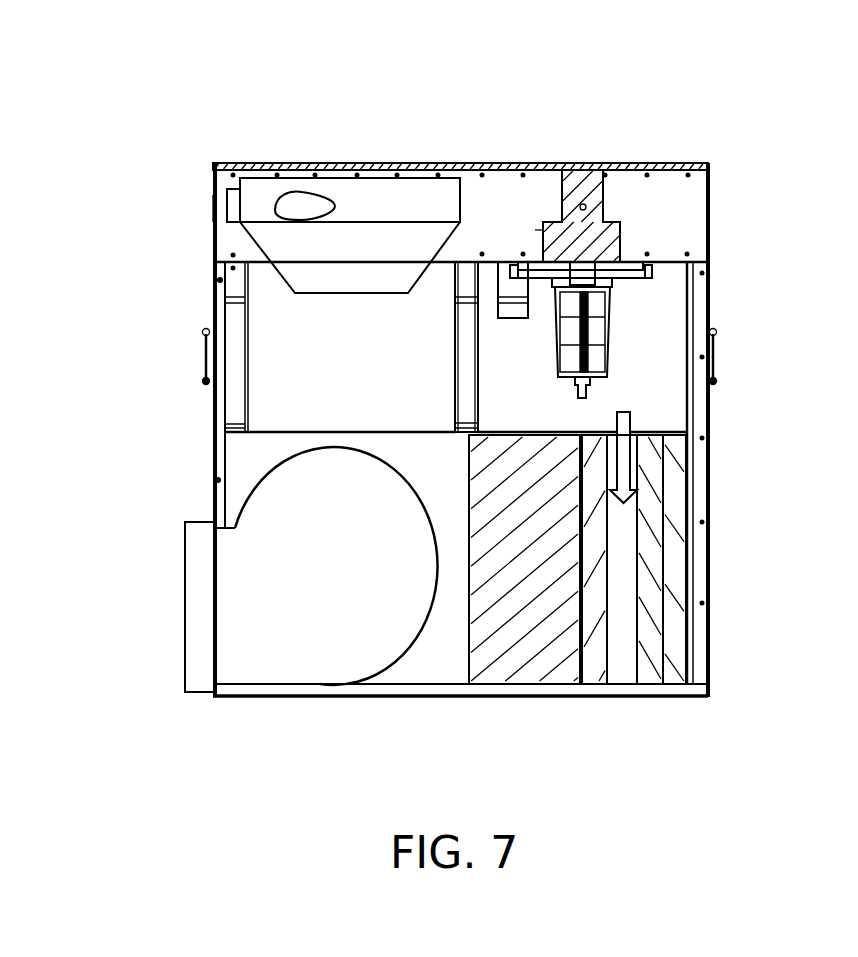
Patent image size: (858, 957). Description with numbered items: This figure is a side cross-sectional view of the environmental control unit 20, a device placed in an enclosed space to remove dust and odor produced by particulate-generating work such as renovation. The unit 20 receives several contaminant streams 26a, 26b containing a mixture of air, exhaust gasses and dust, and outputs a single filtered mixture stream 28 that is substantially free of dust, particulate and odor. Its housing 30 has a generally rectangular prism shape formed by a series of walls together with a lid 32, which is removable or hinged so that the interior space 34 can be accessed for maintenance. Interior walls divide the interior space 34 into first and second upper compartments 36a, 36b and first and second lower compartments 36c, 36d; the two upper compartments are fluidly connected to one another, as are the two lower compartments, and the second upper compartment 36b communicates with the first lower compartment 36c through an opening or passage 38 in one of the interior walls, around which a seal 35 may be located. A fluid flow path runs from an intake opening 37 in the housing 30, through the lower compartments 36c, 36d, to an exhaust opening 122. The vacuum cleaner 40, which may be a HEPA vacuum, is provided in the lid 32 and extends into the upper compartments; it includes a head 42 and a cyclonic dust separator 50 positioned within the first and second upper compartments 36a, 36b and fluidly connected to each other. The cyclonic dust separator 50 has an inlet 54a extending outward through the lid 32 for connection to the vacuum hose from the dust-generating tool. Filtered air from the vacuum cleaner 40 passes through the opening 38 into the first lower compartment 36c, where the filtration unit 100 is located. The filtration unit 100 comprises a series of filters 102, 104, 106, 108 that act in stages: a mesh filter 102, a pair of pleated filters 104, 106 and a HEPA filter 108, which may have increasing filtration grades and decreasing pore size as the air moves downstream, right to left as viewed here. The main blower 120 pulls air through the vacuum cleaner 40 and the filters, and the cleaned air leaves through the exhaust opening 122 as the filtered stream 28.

The environmental control unit 20 is at (738, 223).
The contaminant stream 26a is at (728, 613).
The contaminant stream 26b is at (213, 208).
The filtered mixture stream 28 is at (173, 622).
The housing 30 is at (717, 503).
The lid 32 is at (708, 173).
The interior space 34 is at (438, 648).
The seal 35 is at (632, 420).
The first upper compartment 36a is at (313, 353).
The second upper compartment 36b is at (652, 345).
The first lower compartment 36c is at (668, 484).
The second lower compartment 36d is at (322, 613).
The intake opening 37 is at (710, 570).
The opening or passage 38 is at (668, 427).
The vacuum cleaner 40 is at (485, 162).
The head 42 is at (585, 188).
The cyclonic dust separator 50 is at (367, 203).
The inlet 54a is at (227, 193).
The filtration unit 100 is at (624, 631).
The mesh filter 102 is at (718, 596).
The pleated filter 104 is at (643, 610).
The pleated filter 106 is at (593, 622).
The HEPA filter 108 is at (525, 623).
The blower 120 is at (315, 522).
The exhaust opening 122 is at (183, 573).